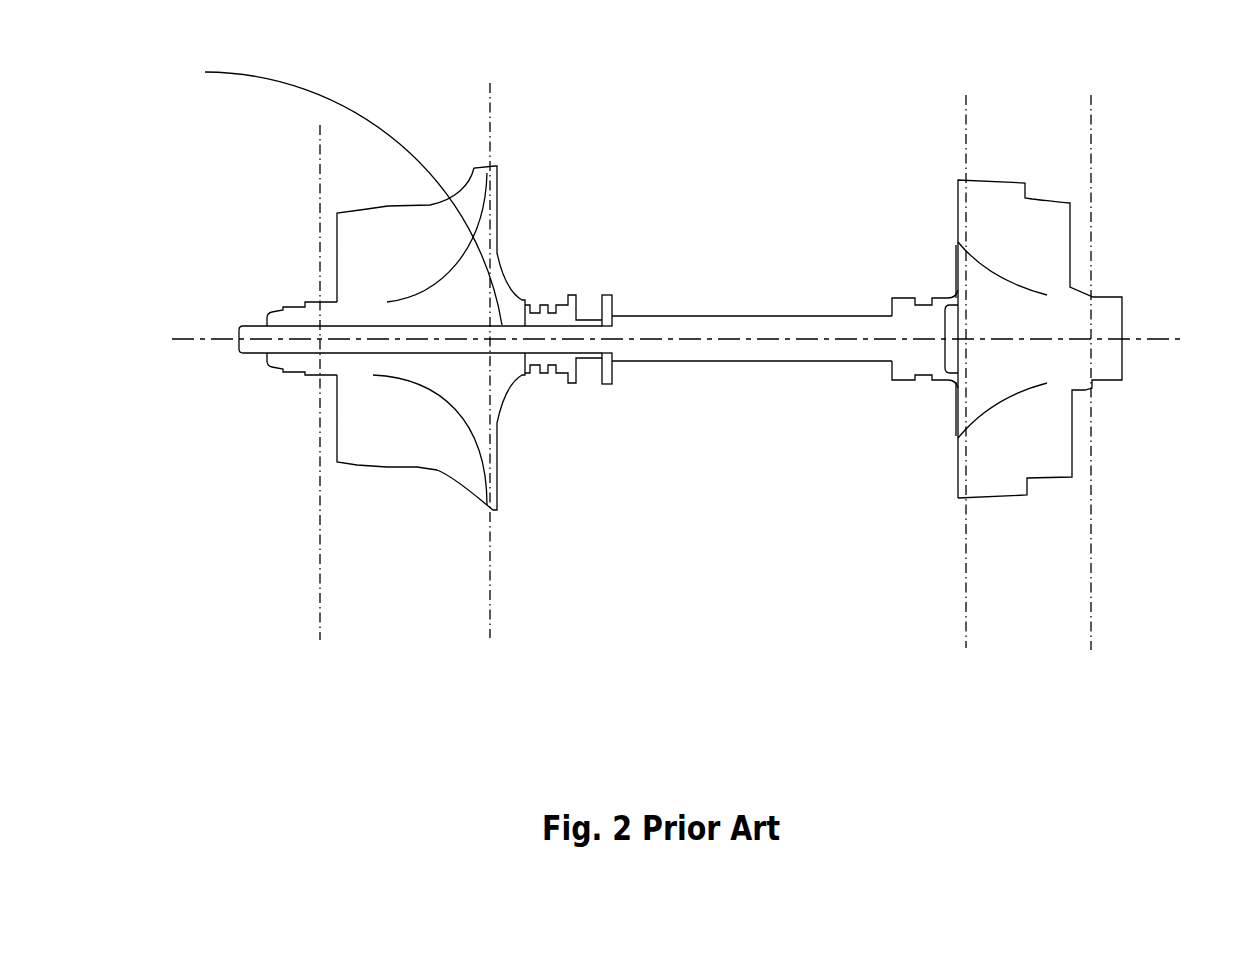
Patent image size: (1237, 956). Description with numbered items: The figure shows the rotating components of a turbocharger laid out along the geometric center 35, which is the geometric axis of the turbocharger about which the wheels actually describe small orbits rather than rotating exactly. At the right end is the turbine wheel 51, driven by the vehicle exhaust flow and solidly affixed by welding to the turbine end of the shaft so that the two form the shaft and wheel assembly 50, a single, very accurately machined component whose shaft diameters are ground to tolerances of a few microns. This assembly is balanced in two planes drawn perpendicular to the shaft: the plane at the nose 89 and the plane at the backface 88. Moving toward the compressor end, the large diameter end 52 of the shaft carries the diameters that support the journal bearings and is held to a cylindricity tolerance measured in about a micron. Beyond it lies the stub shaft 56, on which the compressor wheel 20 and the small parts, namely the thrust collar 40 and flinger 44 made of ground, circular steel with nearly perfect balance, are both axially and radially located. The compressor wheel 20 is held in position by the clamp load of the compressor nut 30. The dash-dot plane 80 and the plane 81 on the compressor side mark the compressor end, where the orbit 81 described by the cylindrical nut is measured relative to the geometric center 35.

The compressor wheel 20 is at (420, 428).
The compressor nut 30 is at (293, 363).
The geometric center 35 is at (1168, 350).
The thrust collar 40 is at (615, 378).
The thrust sleeve / seal bushing 44 is at (545, 368).
The shaft and wheel assembly 50 is at (922, 357).
The turbine wheel 51 is at (1023, 242).
The large diameter end of the shaft 52 is at (728, 315).
The stub shaft 56 is at (325, 193).
The compressor-side balance plane 80 is at (322, 552).
The orbit 81 is at (490, 620).
The plane perpendicular to the shaft at the backface 88 is at (967, 578).
The plane perpendicular to the shaft at the nose 89 is at (1093, 590).